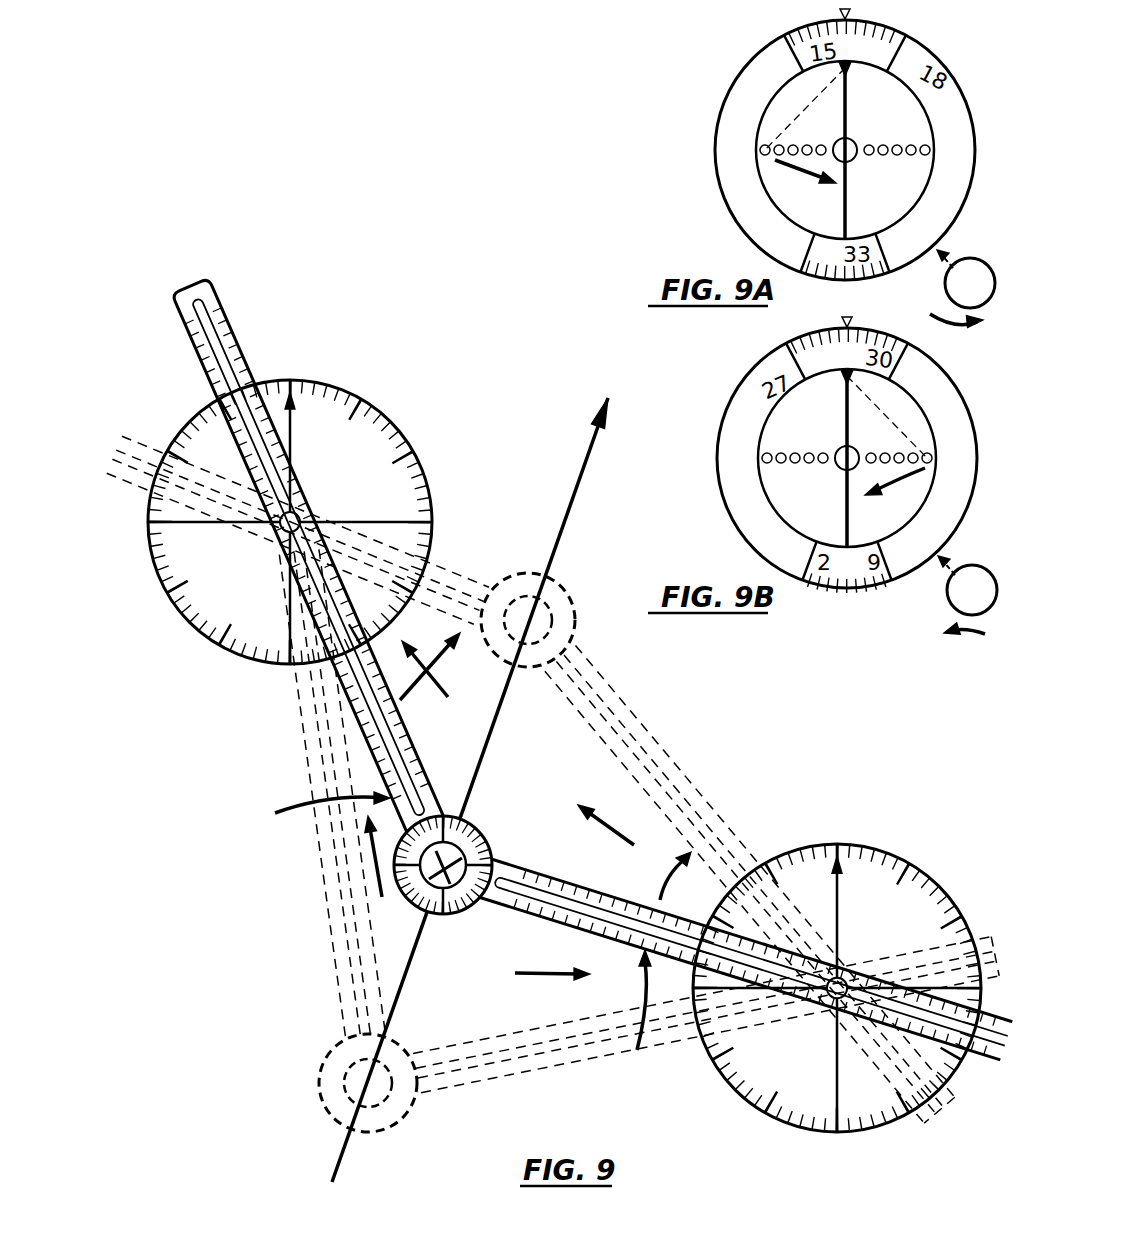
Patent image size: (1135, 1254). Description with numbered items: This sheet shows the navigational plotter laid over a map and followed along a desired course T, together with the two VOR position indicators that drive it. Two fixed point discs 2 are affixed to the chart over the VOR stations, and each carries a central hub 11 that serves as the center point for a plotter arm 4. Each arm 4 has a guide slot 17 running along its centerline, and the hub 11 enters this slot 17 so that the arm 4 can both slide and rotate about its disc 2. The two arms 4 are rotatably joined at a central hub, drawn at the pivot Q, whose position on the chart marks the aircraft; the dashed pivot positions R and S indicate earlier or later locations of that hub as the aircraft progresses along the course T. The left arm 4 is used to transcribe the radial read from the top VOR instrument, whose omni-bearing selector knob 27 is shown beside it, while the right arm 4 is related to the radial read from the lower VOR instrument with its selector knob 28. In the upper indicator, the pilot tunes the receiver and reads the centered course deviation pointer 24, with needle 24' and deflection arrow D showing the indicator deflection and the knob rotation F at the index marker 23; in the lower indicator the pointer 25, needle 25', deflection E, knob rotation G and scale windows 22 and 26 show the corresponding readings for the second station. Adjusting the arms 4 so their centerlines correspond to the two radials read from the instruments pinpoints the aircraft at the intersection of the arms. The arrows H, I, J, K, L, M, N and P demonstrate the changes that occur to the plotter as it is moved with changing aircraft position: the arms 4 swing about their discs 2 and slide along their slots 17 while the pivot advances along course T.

In FIG. 9, the disc 2 is at (200, 640).
In FIG. 9, the plotter arm 4 is at (593, 648).
In FIG. 9, the hub 11 is at (335, 475).
In FIG. 9, the guide slot 17 is at (244, 368).
In FIG. 9B, the lower scale window 22 is at (825, 587).
In FIG. 9A, the index marker 23 is at (852, 14).
In FIG. 9A, the course deviation pointer 24 is at (755, 91).
In FIG. 9A, the course needle 24' is at (757, 151).
In FIG. 9B, the course deviation pointer 25 is at (921, 401).
In FIG. 9B, the course needle 25' is at (762, 459).
In FIG. 9B, the upper scale window 26 is at (890, 362).
In FIG. 9A, the OBS 27 is at (968, 257).
In FIG. 9B, the OBS 28 is at (955, 610).
In FIG. 9A, the direction arrow D is at (787, 170).
In FIG. 9B, the direction arrow E is at (898, 487).
In FIG. 9A, the rotation arrow F is at (940, 317).
In FIG. 9B, the rotation arrow G is at (970, 636).
In FIG. 9, the motion arrow H is at (297, 820).
In FIG. 9, the motion arrow I is at (400, 697).
In FIG. 9, the motion arrow J is at (447, 684).
In FIG. 9, the motion arrow K is at (377, 880).
In FIG. 9, the motion arrow L is at (535, 972).
In FIG. 9, the motion arrow M is at (633, 1065).
In FIG. 9, the motion arrow N is at (603, 826).
In FIG. 9, the motion arrow P is at (657, 897).
In FIG. 9, the pivot Q is at (473, 823).
In FIG. 9, the pivot position R is at (404, 1113).
In FIG. 9, the pivot position S is at (580, 625).
In FIG. 9, the course T is at (576, 492).